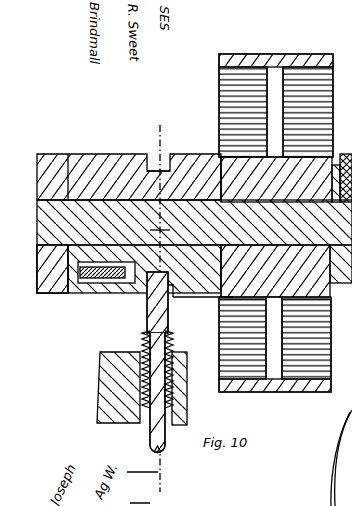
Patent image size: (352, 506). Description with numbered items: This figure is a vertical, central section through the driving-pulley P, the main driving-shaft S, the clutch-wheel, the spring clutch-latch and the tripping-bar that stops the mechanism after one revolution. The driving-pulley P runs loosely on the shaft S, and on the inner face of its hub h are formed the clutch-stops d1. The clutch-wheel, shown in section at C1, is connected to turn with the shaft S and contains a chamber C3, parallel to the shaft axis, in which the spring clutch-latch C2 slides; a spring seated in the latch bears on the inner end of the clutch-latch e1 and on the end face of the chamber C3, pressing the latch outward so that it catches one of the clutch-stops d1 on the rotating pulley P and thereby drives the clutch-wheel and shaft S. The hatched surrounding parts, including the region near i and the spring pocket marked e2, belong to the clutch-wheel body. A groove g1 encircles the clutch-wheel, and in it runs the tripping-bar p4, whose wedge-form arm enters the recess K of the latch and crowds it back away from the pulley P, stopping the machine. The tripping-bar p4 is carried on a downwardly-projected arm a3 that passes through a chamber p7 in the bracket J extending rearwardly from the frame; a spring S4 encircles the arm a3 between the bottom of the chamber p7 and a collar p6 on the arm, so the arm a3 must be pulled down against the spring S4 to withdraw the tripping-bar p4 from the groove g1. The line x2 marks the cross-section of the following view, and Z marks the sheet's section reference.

The magnet yoke block C' C1 is at (108, 158).
The driving-pulley hub h is at (286, 225).
The main driving-shaft S is at (194, 241).
The clutch-stop d1 is at (222, 165).
The chamber C3 is at (114, 288).
The side wall i is at (85, 292).
The spring e2 is at (92, 300).
The inner end of the clutch-latch e1 is at (151, 258).
The section line x2 x2 is at (148, 498).
The groove g1 is at (165, 158).
The tripping-bar p4 is at (152, 302).
The recess K is at (173, 292).
The spring clutch-latch C2 is at (222, 299).
The downwardly-projected arm a3 is at (185, 300).
The chamber p7 is at (150, 420).
The spring S4 is at (183, 364).
The collar p6 is at (106, 360).
The bracket J is at (188, 395).
The driving-pulley P is at (291, 56).
The section line Z is at (142, 487).